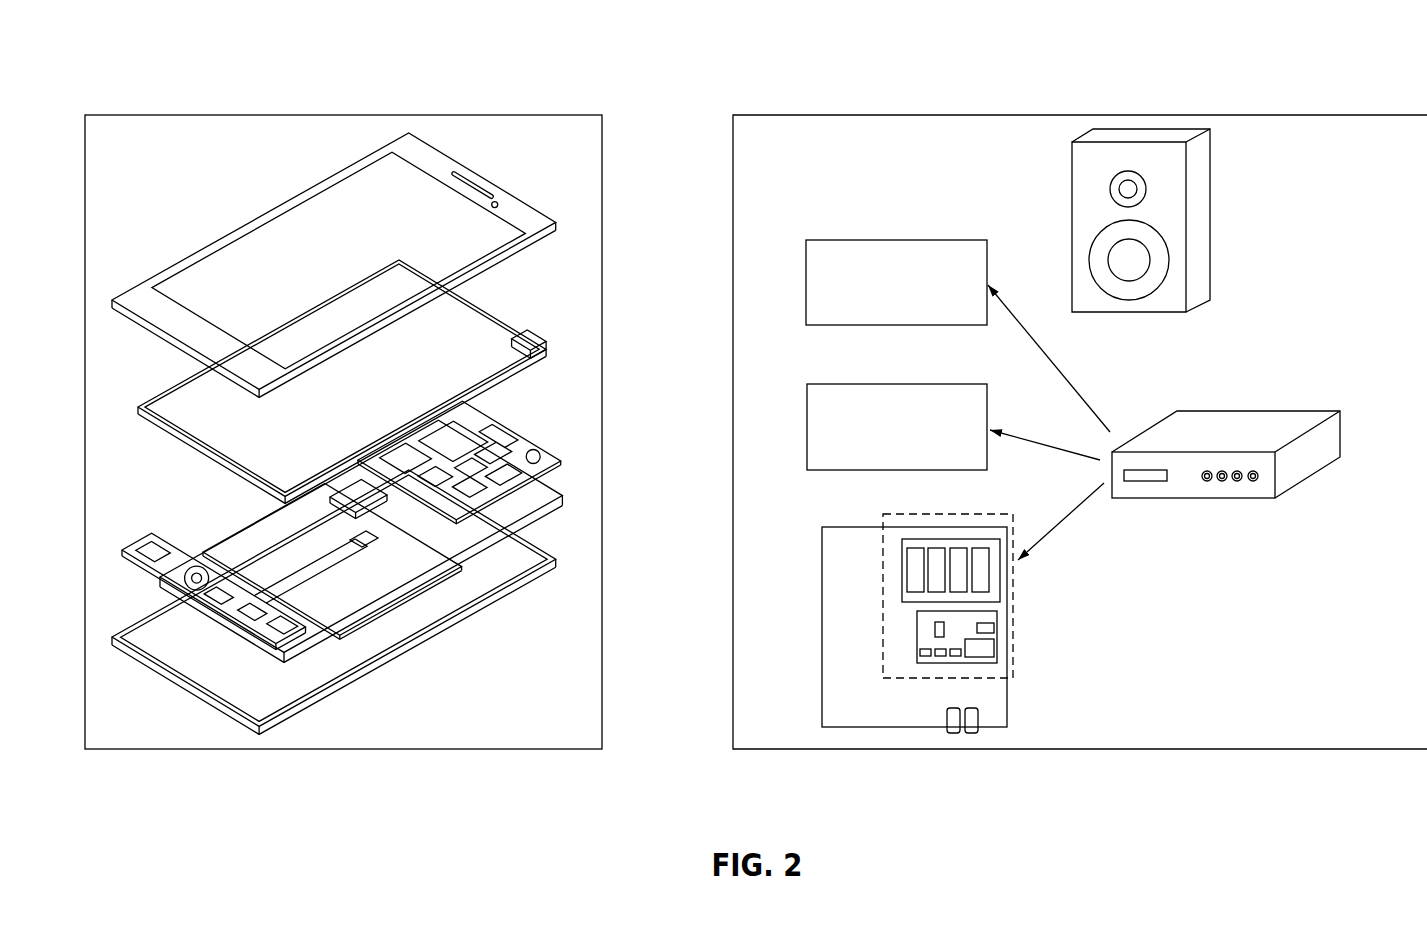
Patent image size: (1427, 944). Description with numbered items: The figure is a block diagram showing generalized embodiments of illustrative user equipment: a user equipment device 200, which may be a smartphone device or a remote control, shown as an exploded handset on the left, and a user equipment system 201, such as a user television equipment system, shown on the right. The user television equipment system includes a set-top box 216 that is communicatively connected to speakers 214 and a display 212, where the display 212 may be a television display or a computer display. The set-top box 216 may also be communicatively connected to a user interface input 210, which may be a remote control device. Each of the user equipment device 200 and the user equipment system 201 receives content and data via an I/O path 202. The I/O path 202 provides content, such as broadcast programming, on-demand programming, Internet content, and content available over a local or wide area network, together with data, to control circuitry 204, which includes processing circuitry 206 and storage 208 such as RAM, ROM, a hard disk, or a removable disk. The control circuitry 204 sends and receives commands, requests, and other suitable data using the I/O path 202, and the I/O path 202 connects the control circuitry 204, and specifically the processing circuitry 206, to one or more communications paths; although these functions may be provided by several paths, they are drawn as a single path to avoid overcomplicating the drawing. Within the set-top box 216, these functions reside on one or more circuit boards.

The user equipment device 200 is at (195, 62).
The user equipment system 201 is at (1275, 72).
The I/O path 202 is at (197, 590).
The control circuitry 204 is at (880, 643).
The processing circuitry 206 is at (913, 622).
The storage 208 is at (897, 567).
The user interface input 210 is at (455, 323).
The display 212 is at (806, 422).
The speakers 214 is at (1072, 226).
The set-top box 216 is at (1230, 411).